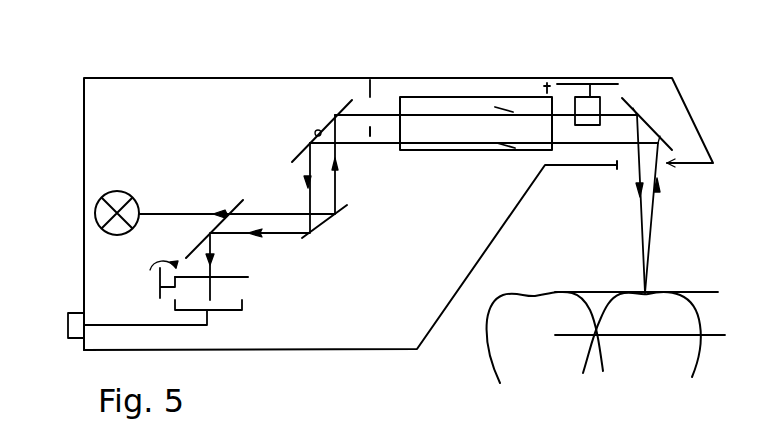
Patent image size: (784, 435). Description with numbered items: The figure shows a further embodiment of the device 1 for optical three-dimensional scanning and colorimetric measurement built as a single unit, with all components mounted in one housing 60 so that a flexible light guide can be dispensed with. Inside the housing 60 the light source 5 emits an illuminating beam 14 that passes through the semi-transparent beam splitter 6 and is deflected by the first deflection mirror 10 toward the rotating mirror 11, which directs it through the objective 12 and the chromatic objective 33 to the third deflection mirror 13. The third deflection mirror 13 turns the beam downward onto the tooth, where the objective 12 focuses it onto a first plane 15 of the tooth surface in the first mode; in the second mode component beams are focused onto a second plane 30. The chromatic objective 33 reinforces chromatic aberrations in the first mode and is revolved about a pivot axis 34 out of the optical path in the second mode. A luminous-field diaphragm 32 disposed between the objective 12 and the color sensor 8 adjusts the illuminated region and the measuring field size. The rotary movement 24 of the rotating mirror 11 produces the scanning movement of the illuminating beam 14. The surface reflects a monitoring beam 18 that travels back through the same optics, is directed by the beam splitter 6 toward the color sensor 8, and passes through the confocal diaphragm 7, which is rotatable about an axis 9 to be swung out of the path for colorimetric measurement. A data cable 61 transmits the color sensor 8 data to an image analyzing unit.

The device 1 is at (338, 70).
The light source 5 is at (113, 193).
The beam splitter 6 is at (243, 198).
The diaphragm 7 is at (238, 272).
The color sensor 8 is at (232, 313).
The axis 9 is at (160, 294).
The first deflection mirror 10 is at (327, 223).
The rotating mirror 11 is at (292, 158).
The objective 12 is at (487, 97).
The third deflection mirror 13 is at (621, 95).
The illuminating beam 14 is at (637, 213).
The first plane 15 is at (697, 291).
The monitoring beam 18 is at (653, 217).
The rotary movement 24 is at (323, 110).
The second plane 30 is at (708, 334).
The luminous-field diaphragm 32 is at (368, 88).
The chromatic objective 33 is at (595, 100).
The pivot axis 34 is at (572, 84).
The housing 60 is at (375, 350).
The data cable 61 is at (68, 325).